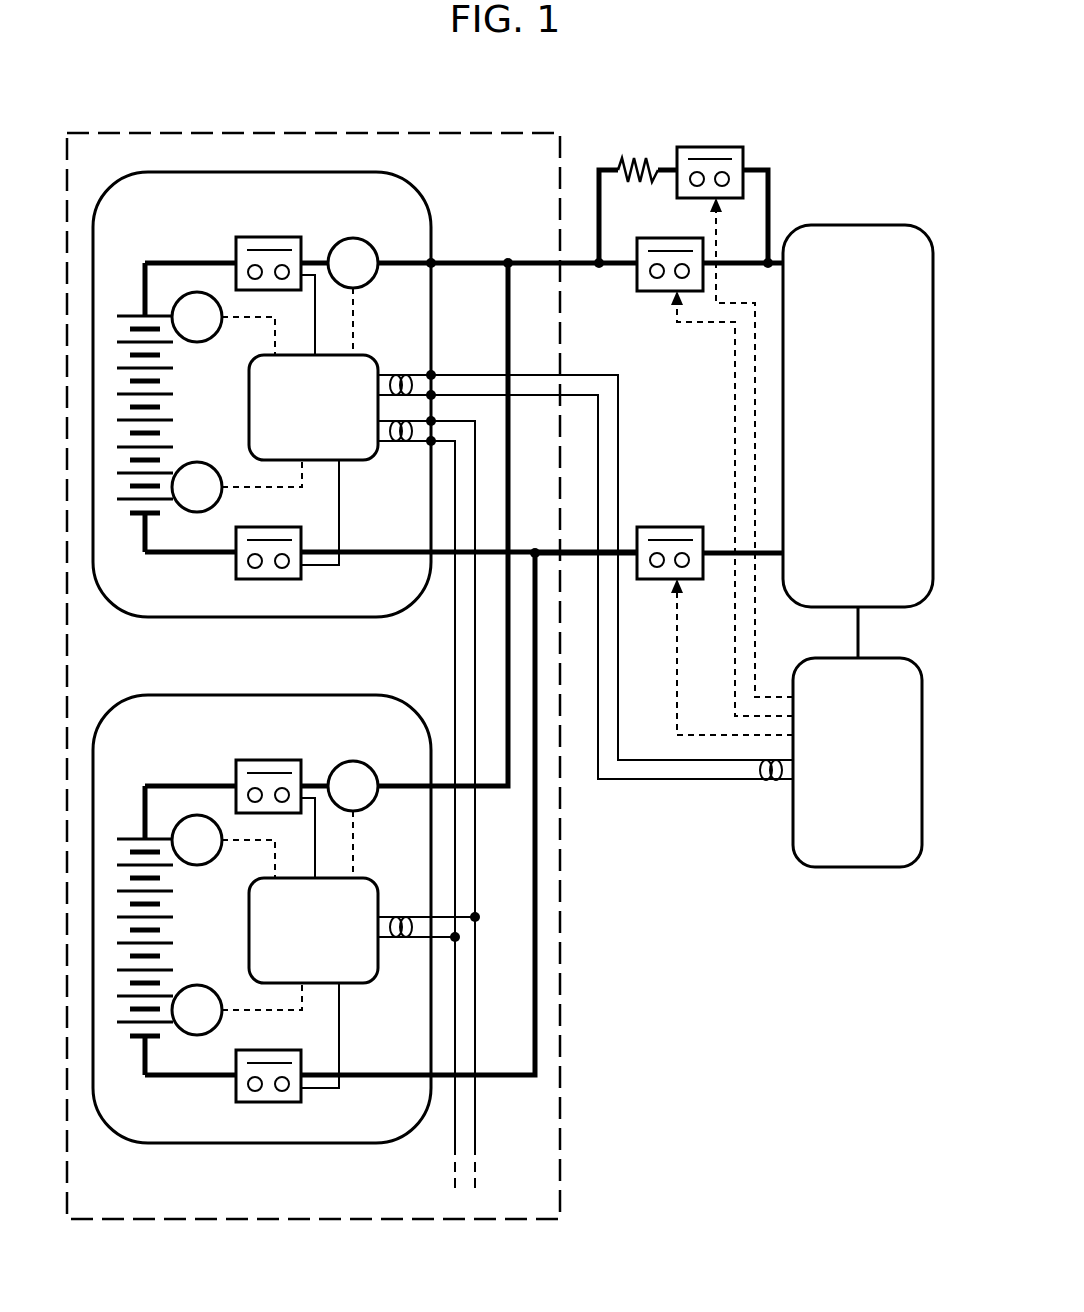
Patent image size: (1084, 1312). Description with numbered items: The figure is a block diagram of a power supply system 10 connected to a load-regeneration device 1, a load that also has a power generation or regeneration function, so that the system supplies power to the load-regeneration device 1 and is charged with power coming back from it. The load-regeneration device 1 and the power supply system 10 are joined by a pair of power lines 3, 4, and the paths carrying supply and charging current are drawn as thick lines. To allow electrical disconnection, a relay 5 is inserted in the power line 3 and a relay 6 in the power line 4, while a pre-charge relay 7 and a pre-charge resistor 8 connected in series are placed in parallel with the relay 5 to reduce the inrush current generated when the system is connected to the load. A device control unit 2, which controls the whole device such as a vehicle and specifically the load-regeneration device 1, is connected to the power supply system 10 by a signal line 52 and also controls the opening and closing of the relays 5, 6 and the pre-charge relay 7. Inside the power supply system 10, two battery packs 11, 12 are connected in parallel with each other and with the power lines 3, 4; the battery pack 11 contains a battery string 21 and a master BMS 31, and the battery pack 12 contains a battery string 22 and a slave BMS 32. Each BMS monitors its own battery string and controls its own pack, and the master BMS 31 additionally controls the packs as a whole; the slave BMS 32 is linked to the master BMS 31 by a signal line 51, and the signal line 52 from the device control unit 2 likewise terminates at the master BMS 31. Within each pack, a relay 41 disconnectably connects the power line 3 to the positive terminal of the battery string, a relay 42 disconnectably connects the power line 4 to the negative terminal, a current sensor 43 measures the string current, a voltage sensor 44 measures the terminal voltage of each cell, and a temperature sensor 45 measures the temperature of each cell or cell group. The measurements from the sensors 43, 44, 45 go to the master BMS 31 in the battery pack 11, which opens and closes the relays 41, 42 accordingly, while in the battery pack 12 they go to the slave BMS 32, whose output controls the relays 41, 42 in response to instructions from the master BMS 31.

The load-regeneration device 1 is at (862, 230).
The device control unit 2 is at (862, 867).
The power line 3 is at (590, 268).
The power line 4 is at (724, 548).
The relay 5 is at (652, 293).
The relay 6 is at (668, 527).
The pre-charge relay 7 is at (728, 157).
The pre-charge resistor 8 is at (640, 160).
The power supply system 10 is at (558, 1130).
The battery pack 11 is at (430, 192).
The battery pack 12 is at (393, 700).
The battery string 21 is at (114, 300).
The battery string 22 is at (114, 823).
The master BMS 31 is at (368, 357).
The slave BMS 32 is at (368, 880).
The relay 41 is at (268, 240).
The relay 42 is at (236, 568).
The current sensor 43 is at (360, 240).
The voltage sensor 44 is at (205, 340).
The temperature sensor 45 is at (197, 462).
The signal line 51 is at (455, 628).
The signal line 52 is at (686, 782).